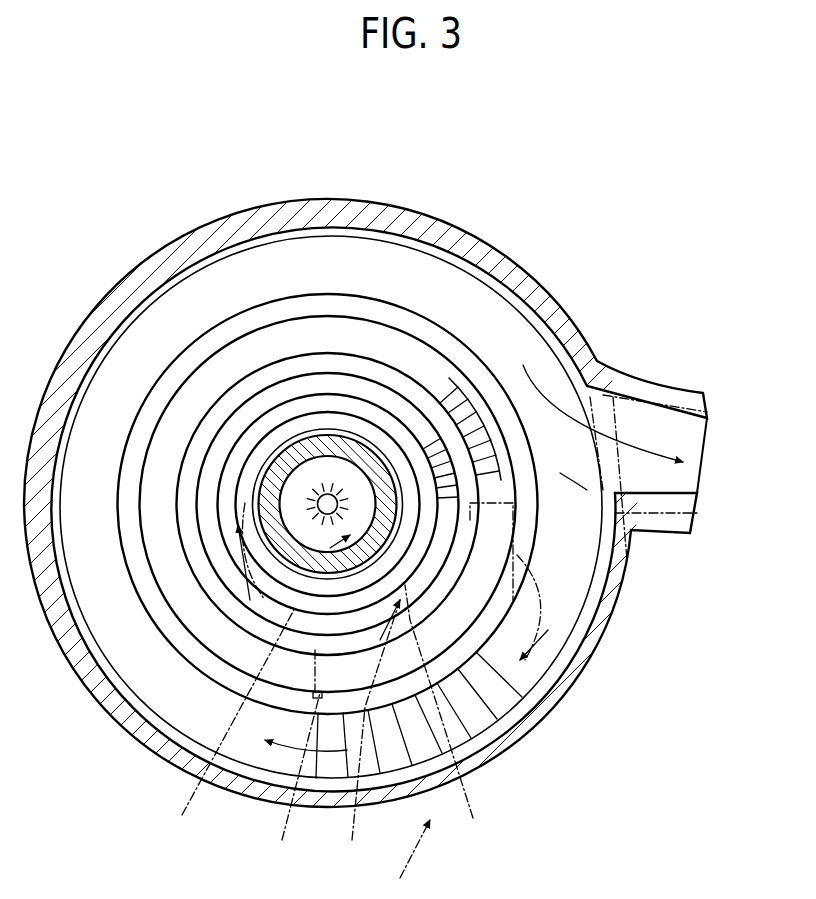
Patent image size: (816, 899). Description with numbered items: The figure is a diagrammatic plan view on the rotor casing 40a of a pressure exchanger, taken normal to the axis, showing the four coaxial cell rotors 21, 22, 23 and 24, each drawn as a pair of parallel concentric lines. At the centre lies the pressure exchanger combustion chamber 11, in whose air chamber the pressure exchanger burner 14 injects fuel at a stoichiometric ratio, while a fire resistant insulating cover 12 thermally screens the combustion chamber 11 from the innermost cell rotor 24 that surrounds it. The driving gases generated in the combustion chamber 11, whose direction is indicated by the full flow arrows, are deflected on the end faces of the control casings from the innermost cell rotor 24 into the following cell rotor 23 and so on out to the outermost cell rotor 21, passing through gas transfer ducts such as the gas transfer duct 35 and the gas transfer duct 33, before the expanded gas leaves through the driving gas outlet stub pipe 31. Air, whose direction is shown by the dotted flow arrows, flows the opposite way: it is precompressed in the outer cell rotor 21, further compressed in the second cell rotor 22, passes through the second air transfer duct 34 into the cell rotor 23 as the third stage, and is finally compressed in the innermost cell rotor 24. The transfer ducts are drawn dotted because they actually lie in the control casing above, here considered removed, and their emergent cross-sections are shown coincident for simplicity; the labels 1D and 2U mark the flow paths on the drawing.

The rotor casing 40a is at (550, 465).
The driving gas outlet stub pipe 31 is at (667, 495).
The gas transfer duct 35 is at (200, 673).
The cell rotor 21 is at (87, 607).
The cell rotor 22 is at (152, 572).
The cell rotor 23 is at (195, 495).
The cell rotor 24 is at (240, 464).
The fire resistant insulating cover 12 is at (380, 511).
The pressure exchanger combustion chamber 11 is at (282, 534).
The pressure exchanger burner 14 is at (324, 491).
The first flow path 1D is at (497, 513).
The second flow path 2U is at (245, 503).
The gas transfer duct 33 is at (534, 607).
The second air transfer duct 34 is at (368, 737).